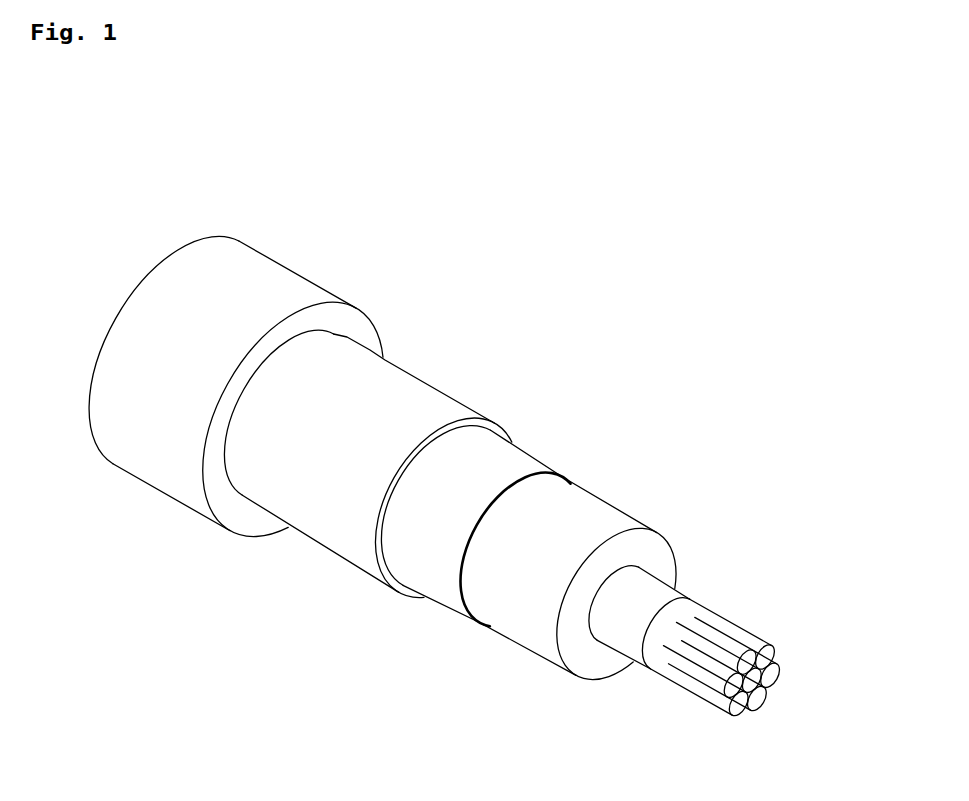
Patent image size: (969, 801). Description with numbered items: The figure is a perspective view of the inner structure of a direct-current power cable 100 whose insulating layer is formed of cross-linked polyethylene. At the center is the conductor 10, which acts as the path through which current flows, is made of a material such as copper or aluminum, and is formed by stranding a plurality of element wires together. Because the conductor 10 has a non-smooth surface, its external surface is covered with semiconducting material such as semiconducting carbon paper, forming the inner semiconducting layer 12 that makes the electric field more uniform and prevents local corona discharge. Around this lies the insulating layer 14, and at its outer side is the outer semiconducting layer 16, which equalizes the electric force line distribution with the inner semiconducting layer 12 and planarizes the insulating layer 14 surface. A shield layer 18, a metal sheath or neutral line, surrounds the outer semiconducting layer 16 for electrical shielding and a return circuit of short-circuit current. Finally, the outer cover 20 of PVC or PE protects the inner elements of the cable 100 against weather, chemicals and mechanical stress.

The DC power cable 100 is at (685, 184).
The conductor 10 is at (736, 626).
The inner semiconducting layer 12 is at (676, 581).
The insulating layer 14 is at (589, 548).
The outer semiconducting layer 16 is at (510, 494).
The shield layer 18 is at (388, 450).
The outer cover 20 is at (236, 364).